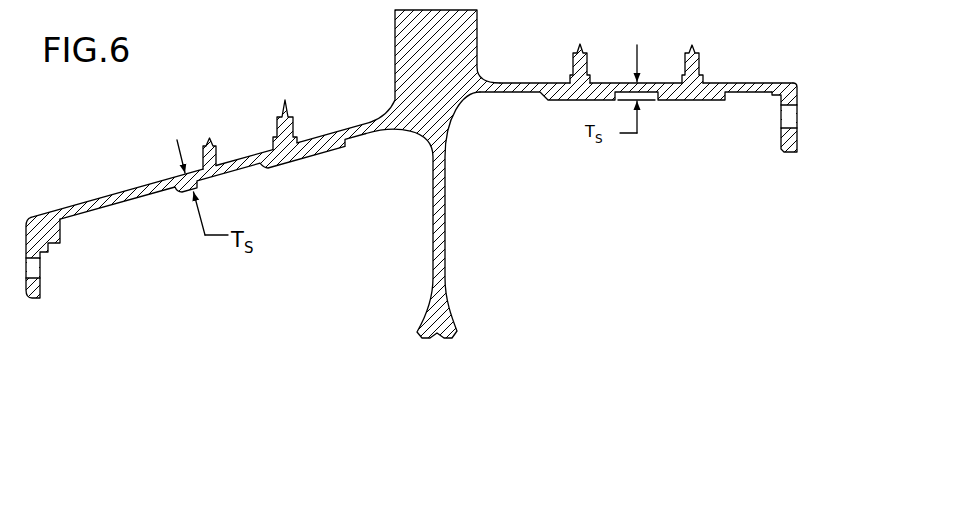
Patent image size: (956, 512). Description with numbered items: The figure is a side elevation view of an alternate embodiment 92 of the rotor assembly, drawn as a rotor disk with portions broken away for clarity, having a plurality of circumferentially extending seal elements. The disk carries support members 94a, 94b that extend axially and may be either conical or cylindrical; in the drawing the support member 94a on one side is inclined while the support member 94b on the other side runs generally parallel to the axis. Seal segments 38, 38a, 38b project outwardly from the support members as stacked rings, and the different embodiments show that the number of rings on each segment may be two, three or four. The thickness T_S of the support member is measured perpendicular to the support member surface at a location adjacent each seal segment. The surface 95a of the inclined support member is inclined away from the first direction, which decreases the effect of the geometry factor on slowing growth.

The seal segment 38 is at (591, 57).
The seal segment 38a is at (202, 147).
The seal segment 38b is at (295, 112).
The alternate embodiment of the rotor assembly 92 is at (448, 208).
The support member 94a is at (85, 212).
The support member 94b is at (761, 94).
The surface 95a is at (148, 185).